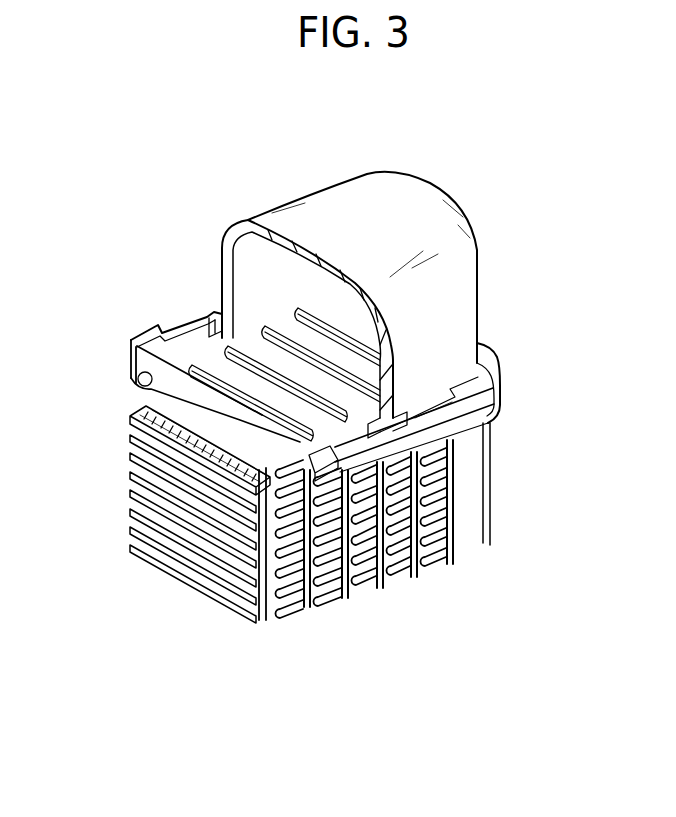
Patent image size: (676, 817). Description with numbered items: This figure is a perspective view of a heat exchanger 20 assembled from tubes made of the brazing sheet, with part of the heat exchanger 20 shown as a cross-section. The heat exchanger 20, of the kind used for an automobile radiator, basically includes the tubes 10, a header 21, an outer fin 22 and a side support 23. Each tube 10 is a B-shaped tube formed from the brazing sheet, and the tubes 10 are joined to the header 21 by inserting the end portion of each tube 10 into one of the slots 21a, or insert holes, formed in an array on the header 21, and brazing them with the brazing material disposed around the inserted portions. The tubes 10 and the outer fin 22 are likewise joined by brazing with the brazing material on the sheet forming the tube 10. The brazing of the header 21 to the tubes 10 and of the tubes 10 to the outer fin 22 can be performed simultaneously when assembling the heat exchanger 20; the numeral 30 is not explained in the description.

The tube 10 is at (317, 600).
The heat exchanger 20 is at (250, 185).
The header 21 is at (138, 336).
The slot 21a is at (250, 350).
The outer fin 22 is at (131, 492).
The side support 23 is at (485, 470).
The contact portion 30 is at (258, 612).